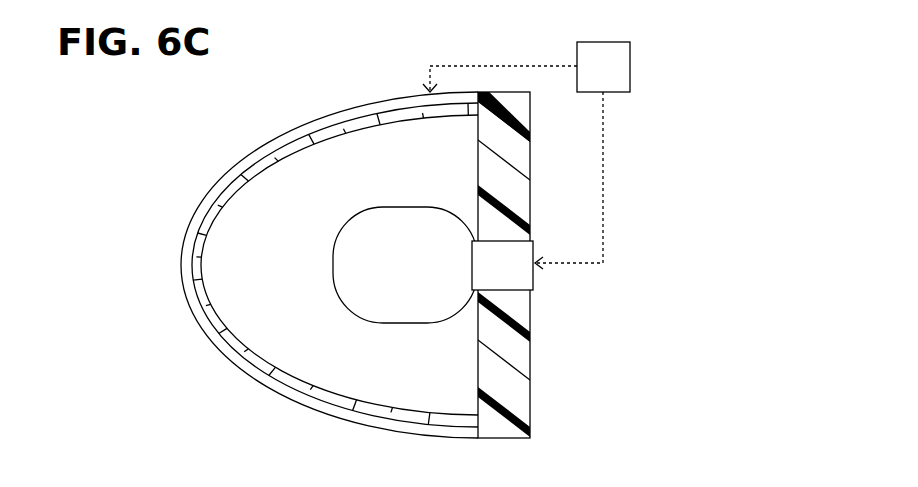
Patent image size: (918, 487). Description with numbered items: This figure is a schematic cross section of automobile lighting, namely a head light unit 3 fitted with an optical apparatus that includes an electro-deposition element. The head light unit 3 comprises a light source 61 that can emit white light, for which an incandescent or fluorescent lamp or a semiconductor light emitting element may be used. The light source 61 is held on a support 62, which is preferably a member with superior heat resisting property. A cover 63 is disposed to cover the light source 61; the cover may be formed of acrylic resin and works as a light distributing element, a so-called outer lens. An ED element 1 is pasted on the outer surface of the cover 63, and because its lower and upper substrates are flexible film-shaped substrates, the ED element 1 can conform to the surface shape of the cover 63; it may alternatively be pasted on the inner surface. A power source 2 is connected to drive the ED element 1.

The ED element 1 is at (381, 91).
The cover 63 is at (312, 137).
The support 62 is at (532, 390).
The light source 61 is at (537, 291).
The power source 2 is at (630, 65).
The head light unit 3 is at (560, 460).